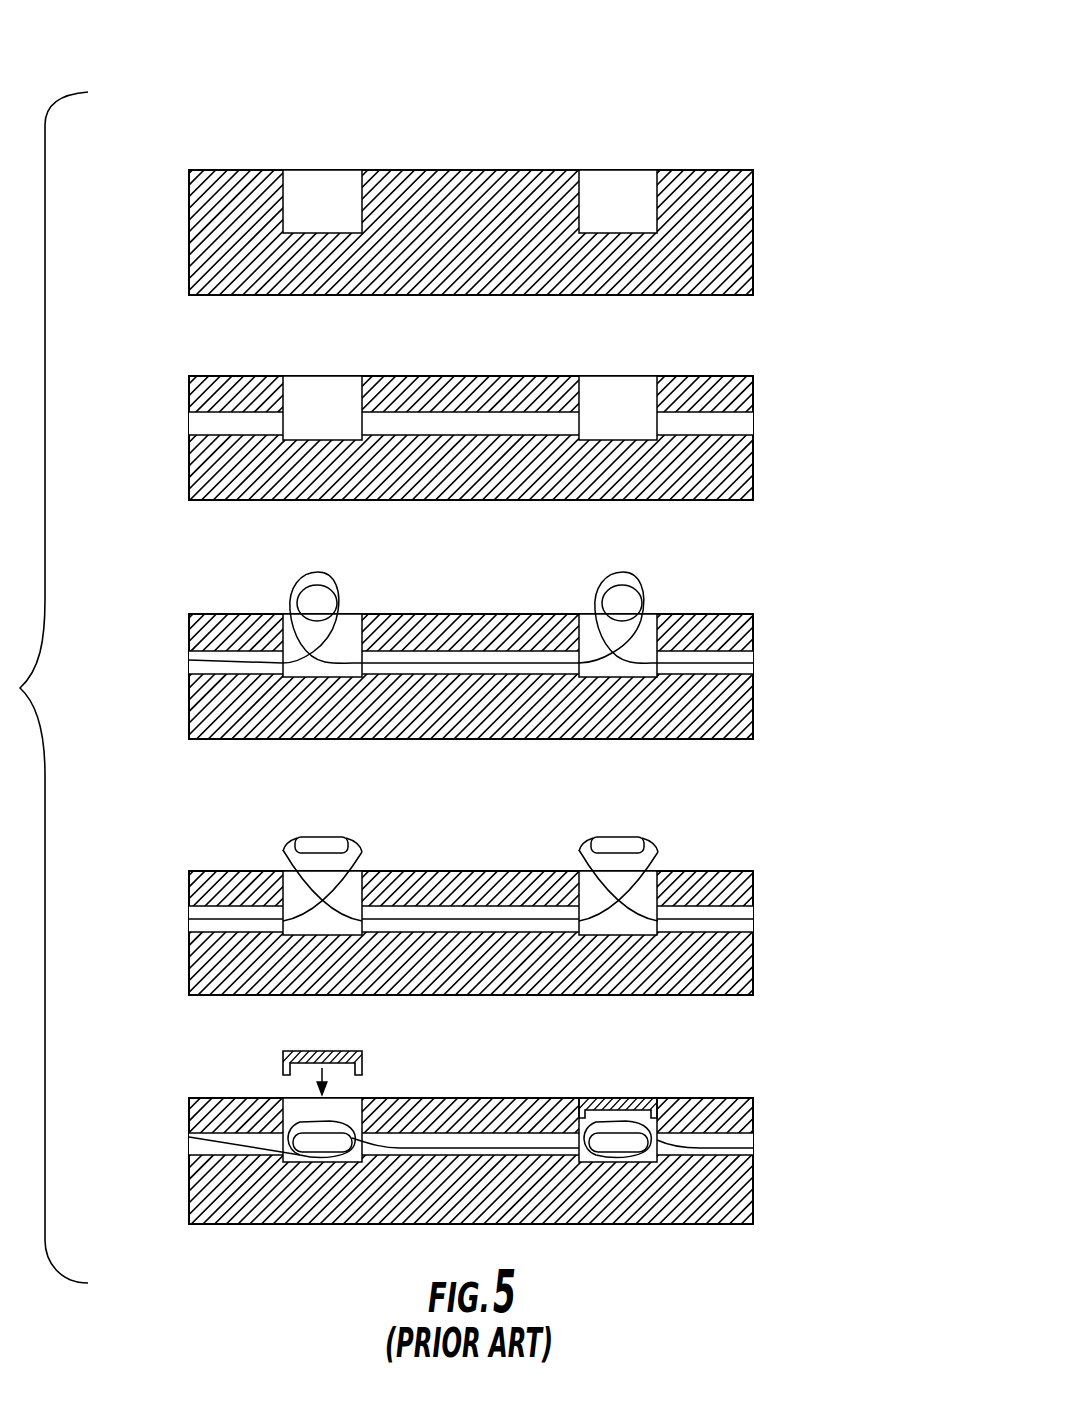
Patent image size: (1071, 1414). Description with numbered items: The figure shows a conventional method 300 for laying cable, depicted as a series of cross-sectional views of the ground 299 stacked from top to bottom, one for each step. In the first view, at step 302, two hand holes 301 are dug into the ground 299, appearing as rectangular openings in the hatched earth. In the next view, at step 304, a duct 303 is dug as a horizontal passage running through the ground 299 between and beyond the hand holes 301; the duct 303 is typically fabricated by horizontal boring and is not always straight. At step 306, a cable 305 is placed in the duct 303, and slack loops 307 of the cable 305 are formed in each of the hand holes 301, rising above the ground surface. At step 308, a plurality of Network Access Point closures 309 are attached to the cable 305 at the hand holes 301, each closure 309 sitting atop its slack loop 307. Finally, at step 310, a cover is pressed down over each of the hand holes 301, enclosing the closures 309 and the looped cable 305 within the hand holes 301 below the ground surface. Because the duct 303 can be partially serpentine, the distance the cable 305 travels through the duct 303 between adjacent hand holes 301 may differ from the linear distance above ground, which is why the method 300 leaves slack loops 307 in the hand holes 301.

The conventional method 300 is at (637, 58).
The ground 299 is at (200, 217).
The hand holes 301 is at (345, 220).
The step 302 is at (535, 707).
The duct 303 is at (196, 424).
The step 304 is at (753, 470).
The cable 305 is at (482, 658).
The step 306 is at (753, 705).
The slack loops 307 is at (329, 575).
The step 308 is at (753, 968).
The Network Access Point (NAP) closures 309 is at (346, 838).
The step 310 is at (753, 1180).